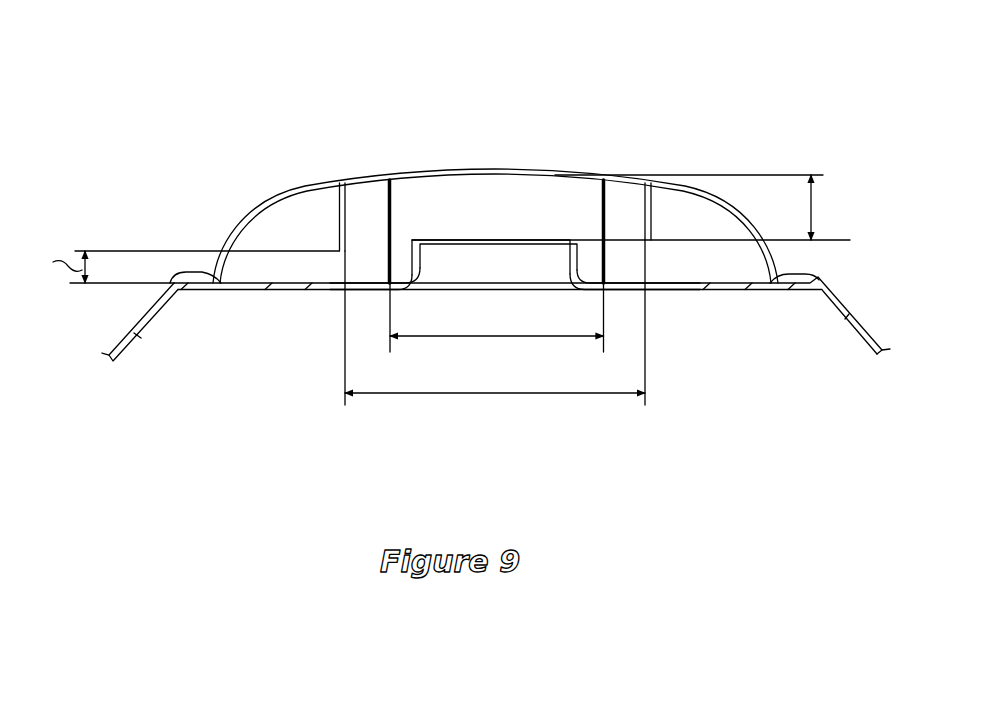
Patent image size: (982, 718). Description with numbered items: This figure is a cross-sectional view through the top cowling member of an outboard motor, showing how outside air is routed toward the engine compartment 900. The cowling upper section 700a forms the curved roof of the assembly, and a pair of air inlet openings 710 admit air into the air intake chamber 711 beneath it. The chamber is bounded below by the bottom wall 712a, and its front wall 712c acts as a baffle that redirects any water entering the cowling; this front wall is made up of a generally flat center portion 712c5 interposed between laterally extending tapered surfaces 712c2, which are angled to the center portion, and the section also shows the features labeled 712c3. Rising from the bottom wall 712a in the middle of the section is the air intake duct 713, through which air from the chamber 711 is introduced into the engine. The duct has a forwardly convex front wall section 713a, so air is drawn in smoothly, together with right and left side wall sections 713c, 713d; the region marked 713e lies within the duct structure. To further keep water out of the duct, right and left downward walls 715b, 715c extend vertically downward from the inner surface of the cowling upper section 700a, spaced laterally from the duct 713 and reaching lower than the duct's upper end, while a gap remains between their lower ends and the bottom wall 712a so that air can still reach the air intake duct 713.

The engine compartment 900 is at (469, 237).
The cowling upper section 700a is at (362, 177).
The air inlet openings 710 is at (488, 150).
The air intake chamber 711 is at (532, 222).
The bottom wall 712a is at (250, 276).
The front wall 712c is at (615, 272).
The laterally extending tapered surfaces 712c2 is at (363, 263).
The plate bend bump 712c3 is at (167, 279).
The center portion 712c5 is at (482, 175).
The air intake duct 713 is at (515, 181).
The front wall section 713a is at (483, 198).
The right side wall section 713c is at (417, 253).
The left side wall section 713d is at (580, 258).
The inner cavity of protrusion 713e is at (512, 260).
The right downward wall 715b is at (339, 215).
The left downward wall 715c is at (654, 215).